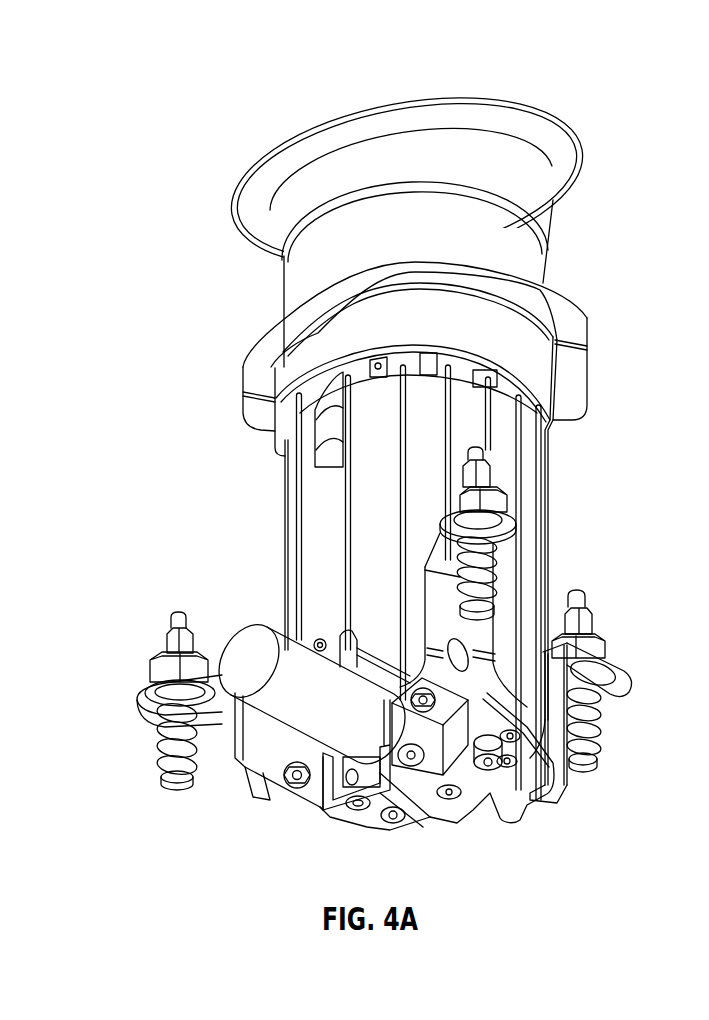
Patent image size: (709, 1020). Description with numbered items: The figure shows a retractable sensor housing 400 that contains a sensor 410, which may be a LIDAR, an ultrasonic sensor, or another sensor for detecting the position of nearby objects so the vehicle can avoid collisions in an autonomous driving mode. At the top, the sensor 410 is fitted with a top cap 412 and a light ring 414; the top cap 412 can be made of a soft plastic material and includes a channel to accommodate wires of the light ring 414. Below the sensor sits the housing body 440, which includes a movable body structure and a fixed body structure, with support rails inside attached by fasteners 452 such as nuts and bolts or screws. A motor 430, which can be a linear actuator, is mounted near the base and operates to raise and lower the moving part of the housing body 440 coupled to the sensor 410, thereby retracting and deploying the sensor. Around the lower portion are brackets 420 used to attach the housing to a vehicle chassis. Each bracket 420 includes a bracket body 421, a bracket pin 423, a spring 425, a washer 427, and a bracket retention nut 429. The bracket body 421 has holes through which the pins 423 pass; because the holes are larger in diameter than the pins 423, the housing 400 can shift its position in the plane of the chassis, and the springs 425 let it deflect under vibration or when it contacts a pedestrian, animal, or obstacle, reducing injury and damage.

The retractable sensor housing 400 is at (242, 494).
The sensor 410 is at (557, 227).
The top cap 412 is at (464, 97).
The light ring 414 is at (573, 170).
The brackets 420 is at (513, 510).
The bracket body 421 is at (617, 700).
The bracket pin 423 is at (587, 597).
The spring 425 is at (600, 743).
The washer 427 is at (610, 670).
The bracket retention nut 429 is at (602, 632).
The motor 430 is at (344, 710).
The housing body 440 is at (542, 470).
The fasteners 452 is at (495, 775).